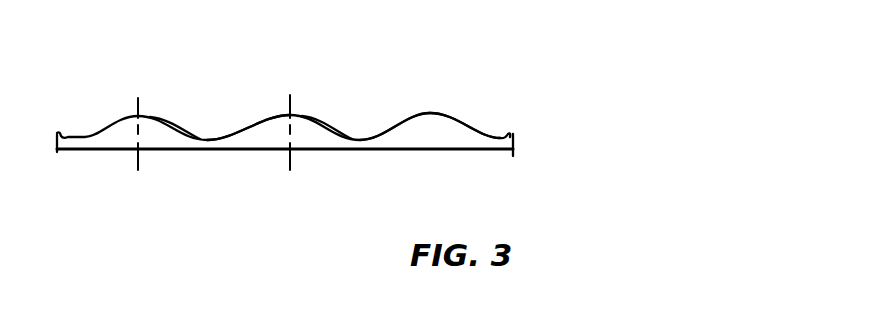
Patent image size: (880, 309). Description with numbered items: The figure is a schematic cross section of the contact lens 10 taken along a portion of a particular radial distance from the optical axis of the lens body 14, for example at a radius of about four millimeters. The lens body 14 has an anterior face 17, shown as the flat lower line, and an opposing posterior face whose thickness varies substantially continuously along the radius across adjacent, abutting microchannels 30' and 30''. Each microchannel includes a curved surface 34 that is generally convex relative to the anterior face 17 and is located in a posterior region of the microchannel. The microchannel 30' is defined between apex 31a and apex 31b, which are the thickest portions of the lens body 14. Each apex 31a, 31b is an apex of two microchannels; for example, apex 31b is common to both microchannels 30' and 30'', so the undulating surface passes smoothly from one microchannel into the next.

The contact lens 10 is at (463, 87).
The lens body 14 is at (440, 136).
The anterior face 17 is at (310, 153).
The microchannel 30' is at (248, 76).
The microchannel 30'' is at (393, 97).
The apex 31a is at (138, 117).
The apex 31b is at (290, 116).
The curved surface 34 is at (160, 118).